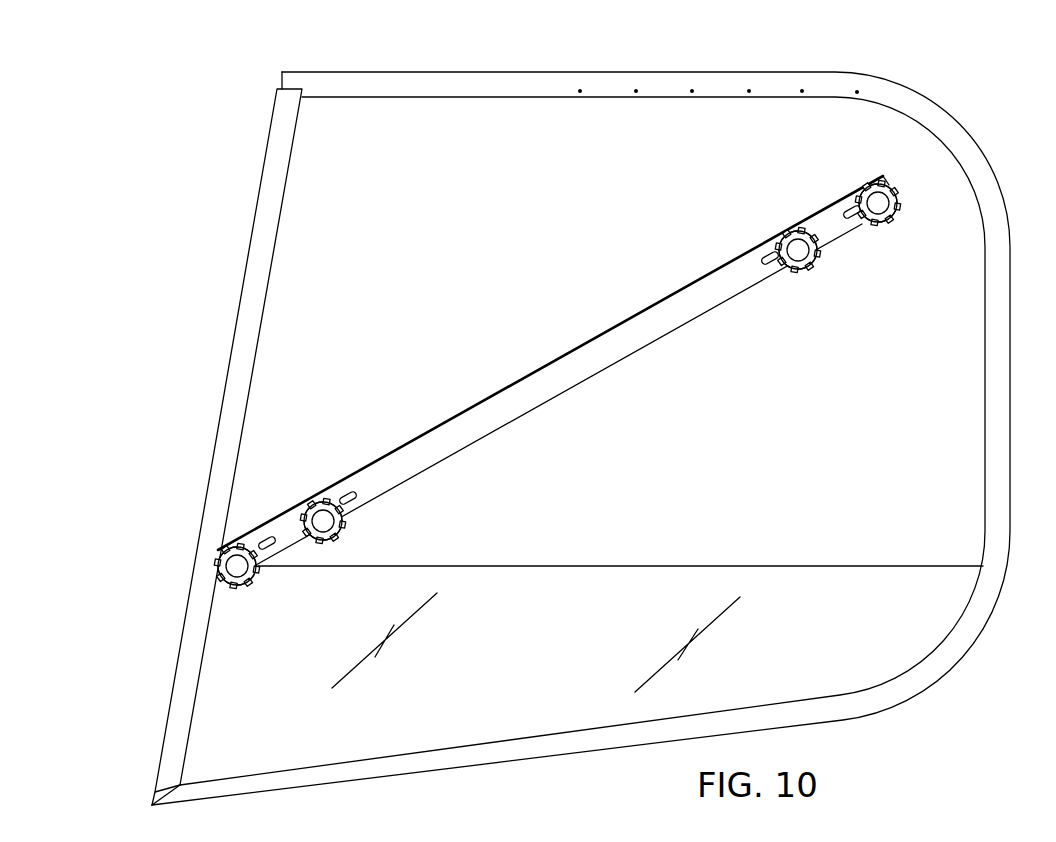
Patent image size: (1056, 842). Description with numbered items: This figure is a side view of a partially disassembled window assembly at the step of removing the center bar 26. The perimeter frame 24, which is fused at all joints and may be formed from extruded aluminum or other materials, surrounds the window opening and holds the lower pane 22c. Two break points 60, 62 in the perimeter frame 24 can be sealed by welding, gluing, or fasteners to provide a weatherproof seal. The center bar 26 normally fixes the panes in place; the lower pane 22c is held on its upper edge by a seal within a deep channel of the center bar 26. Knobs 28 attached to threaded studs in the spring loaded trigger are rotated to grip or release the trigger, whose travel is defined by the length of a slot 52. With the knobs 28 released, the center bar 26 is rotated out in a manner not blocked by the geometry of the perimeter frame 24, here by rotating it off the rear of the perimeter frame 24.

The lower pane 22c is at (818, 687).
The perimeter frame 24 is at (962, 637).
The center bar 26 is at (553, 368).
The knob 28 is at (798, 258).
The slot 52 is at (777, 242).
The break point 60 is at (274, 90).
The break point 62 is at (155, 792).